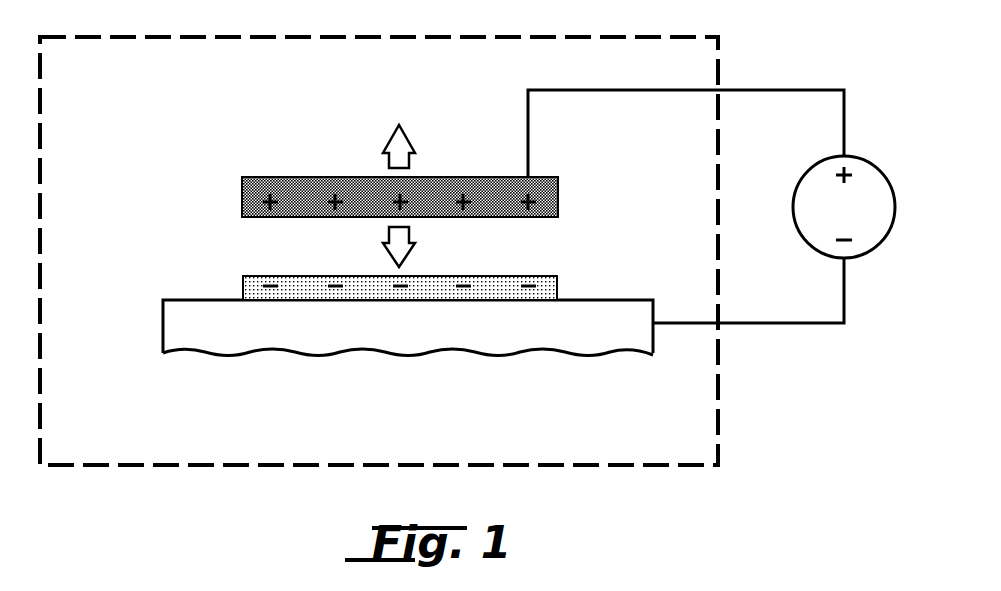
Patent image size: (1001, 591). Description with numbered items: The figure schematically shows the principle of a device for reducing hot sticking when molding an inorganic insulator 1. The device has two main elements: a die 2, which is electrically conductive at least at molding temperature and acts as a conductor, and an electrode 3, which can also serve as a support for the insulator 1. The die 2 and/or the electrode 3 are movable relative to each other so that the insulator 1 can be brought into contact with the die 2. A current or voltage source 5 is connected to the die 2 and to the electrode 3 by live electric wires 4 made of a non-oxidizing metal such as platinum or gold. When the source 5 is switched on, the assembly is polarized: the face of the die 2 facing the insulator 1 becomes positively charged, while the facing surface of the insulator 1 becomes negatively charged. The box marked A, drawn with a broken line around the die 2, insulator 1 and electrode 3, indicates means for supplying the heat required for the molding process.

The inorganic insulator 1 is at (243, 288).
The die 2 is at (241, 200).
The electrode 3 is at (178, 330).
The live electric wires 4 is at (773, 90).
The current or voltage source 5 is at (793, 222).
The heating means box A is at (97, 467).